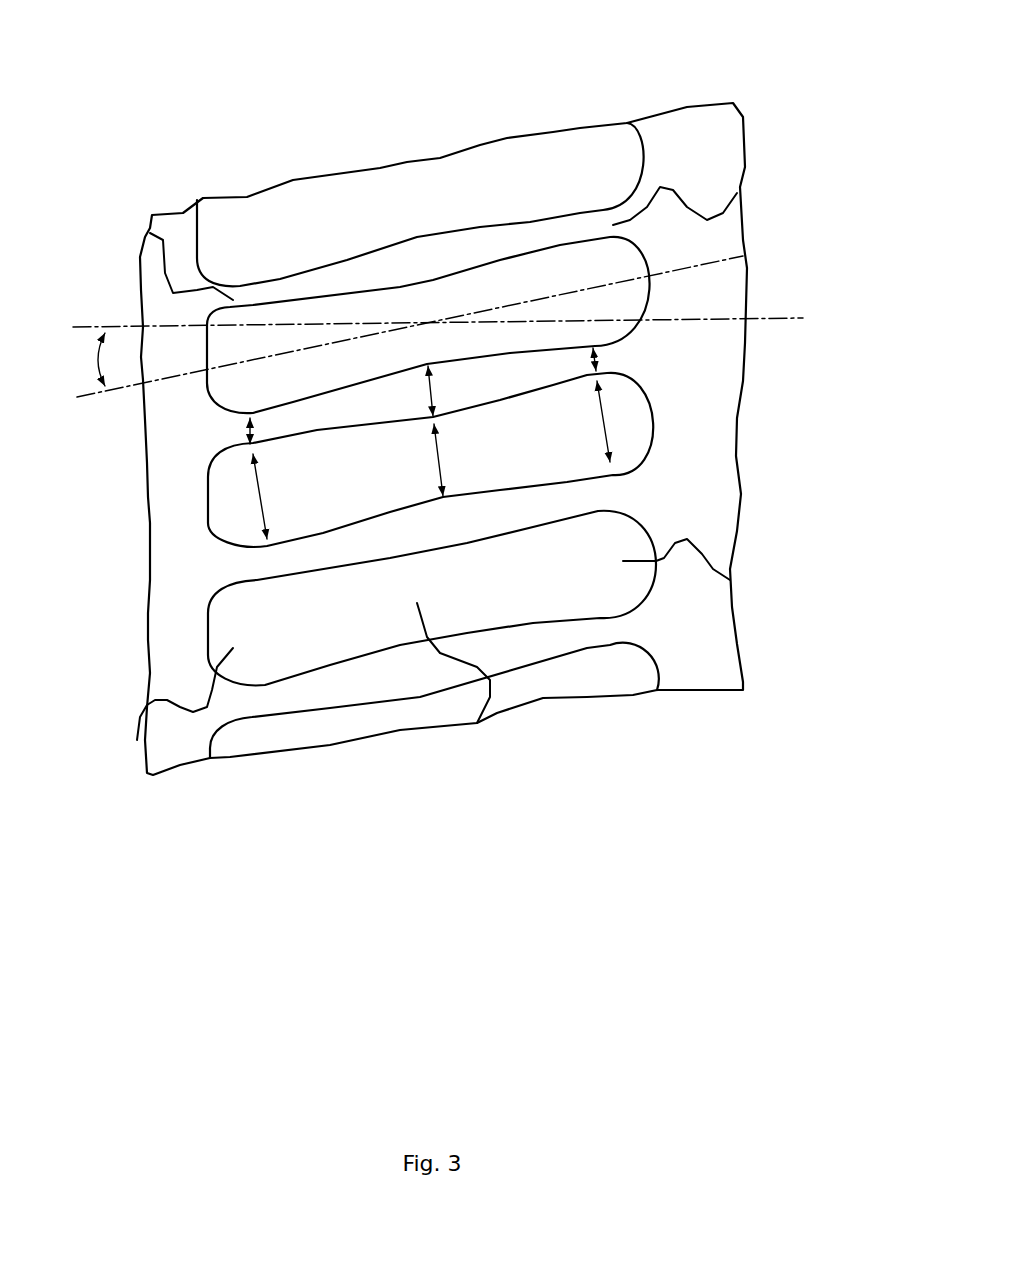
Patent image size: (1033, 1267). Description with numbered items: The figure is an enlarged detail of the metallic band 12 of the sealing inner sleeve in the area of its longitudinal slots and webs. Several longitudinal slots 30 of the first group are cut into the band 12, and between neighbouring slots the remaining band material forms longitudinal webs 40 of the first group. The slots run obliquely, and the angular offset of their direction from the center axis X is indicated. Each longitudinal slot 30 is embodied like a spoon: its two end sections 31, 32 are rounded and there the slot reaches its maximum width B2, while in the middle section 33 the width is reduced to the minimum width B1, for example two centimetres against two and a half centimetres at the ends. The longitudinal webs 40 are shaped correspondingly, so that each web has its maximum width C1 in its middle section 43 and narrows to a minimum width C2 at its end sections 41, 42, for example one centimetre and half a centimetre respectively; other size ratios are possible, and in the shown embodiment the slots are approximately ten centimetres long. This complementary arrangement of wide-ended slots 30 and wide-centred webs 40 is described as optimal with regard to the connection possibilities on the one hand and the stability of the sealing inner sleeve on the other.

The band 12 is at (683, 140).
The longitudinal slot of the first group 30 is at (313, 362).
The end section 31 is at (137, 740).
The end section 32 is at (730, 580).
The middle section 33 is at (477, 723).
The longitudinal web of the first group 40 is at (442, 253).
The end section 41 is at (150, 233).
The end section 42 is at (737, 193).
The middle section 43 is at (423, 253).
The center axis X is at (80, 327).
The minimum width of 30 B1 is at (452, 460).
The maximum width of 30 B2 is at (446, 460).
The maximum width of 40 C1 is at (414, 391).
The minimum width of 40 C2 is at (423, 396).